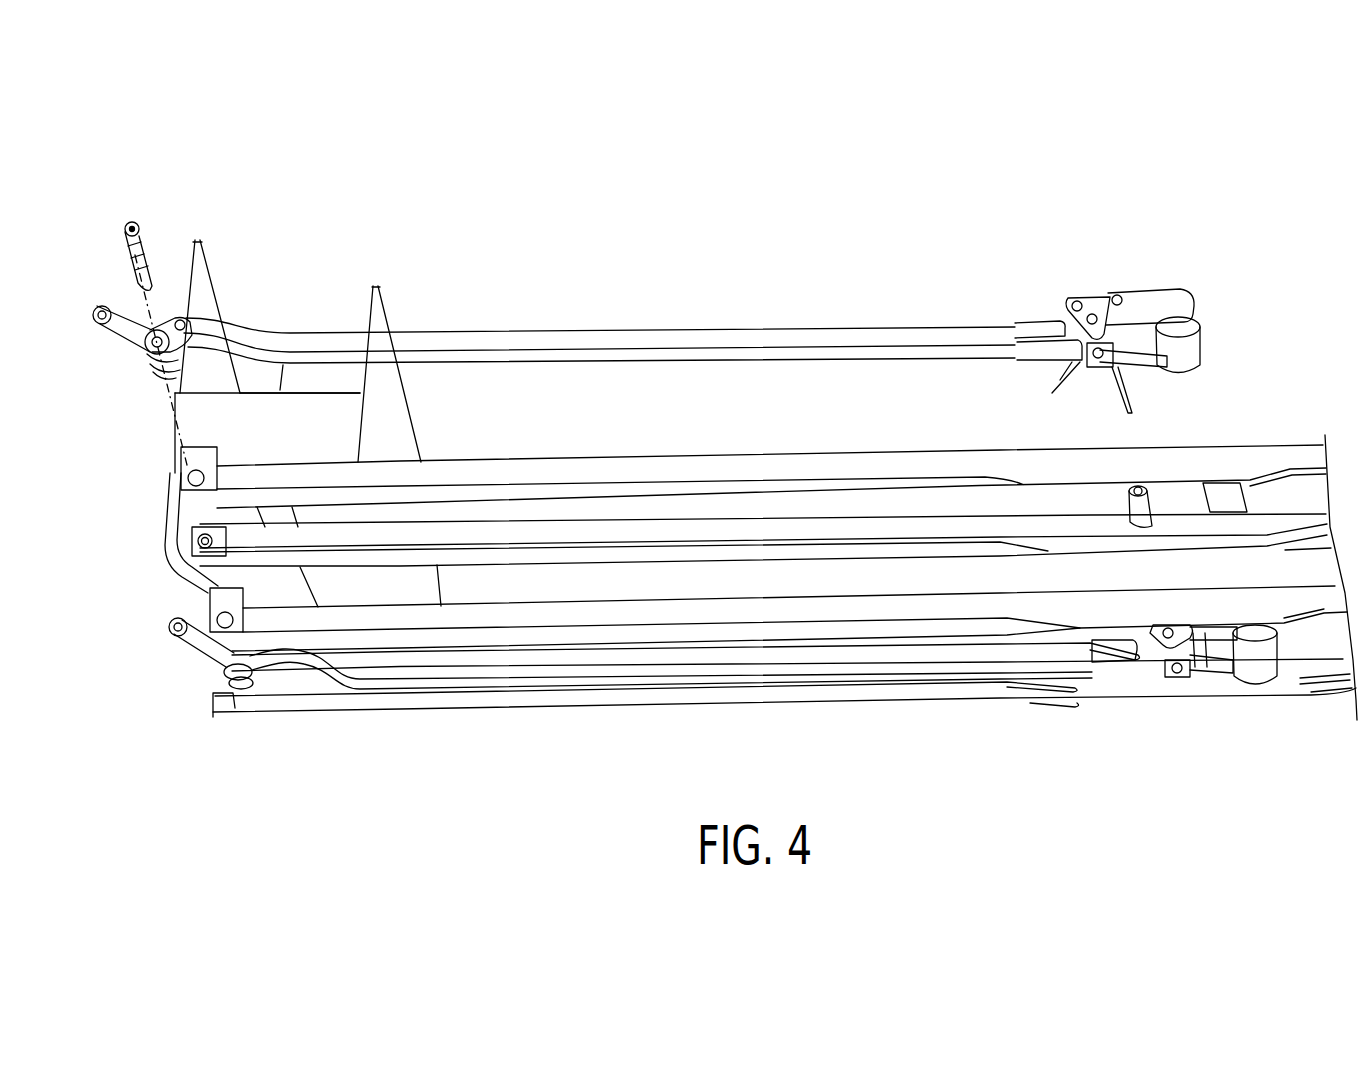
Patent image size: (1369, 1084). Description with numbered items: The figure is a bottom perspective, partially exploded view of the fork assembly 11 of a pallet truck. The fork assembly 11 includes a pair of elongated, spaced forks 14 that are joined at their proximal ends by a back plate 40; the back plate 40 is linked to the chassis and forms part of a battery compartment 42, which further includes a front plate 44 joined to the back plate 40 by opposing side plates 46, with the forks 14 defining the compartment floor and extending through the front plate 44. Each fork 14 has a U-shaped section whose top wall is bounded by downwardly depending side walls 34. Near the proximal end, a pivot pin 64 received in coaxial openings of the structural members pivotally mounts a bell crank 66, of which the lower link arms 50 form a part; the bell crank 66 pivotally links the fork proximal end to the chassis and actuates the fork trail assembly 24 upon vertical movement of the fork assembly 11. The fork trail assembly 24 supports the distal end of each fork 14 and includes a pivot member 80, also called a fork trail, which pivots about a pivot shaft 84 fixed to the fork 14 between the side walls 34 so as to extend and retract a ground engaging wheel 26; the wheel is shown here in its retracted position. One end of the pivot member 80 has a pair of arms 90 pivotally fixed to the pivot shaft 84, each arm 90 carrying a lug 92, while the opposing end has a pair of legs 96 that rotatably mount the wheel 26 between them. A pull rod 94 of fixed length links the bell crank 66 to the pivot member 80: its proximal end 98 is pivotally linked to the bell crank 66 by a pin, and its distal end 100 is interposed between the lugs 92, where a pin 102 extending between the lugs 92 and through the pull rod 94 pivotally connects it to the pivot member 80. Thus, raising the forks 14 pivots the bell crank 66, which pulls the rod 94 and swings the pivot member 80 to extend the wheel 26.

The fork assembly 11 is at (470, 320).
The fork 14 is at (1277, 443).
The fork trail assembly 24 is at (1208, 230).
The ground engaging wheel 26 is at (1202, 345).
The side wall 34 is at (735, 455).
The back plate 40 is at (200, 270).
The battery compartment 42 is at (318, 302).
The front plate 44 is at (378, 305).
The side plate 46 is at (278, 390).
The lower link arm 50 is at (113, 325).
The pivot pin 64 is at (124, 231).
The bell crank 66 is at (157, 376).
The pivot member 80 is at (1144, 283).
The pivot shaft 84 is at (1080, 298).
The arm 90 is at (1068, 306).
The lug 92 is at (1120, 395).
The pull rod 94 is at (935, 330).
The leg 96 is at (1170, 290).
The proximal end of the pull rod 98 is at (200, 318).
The distal end of the pull rod 100 is at (1080, 362).
The pin 102 is at (1097, 292).